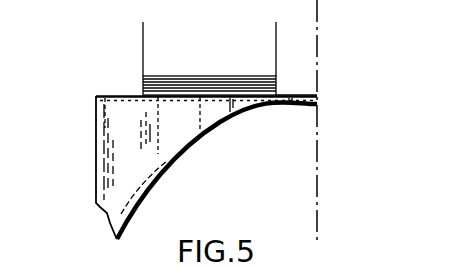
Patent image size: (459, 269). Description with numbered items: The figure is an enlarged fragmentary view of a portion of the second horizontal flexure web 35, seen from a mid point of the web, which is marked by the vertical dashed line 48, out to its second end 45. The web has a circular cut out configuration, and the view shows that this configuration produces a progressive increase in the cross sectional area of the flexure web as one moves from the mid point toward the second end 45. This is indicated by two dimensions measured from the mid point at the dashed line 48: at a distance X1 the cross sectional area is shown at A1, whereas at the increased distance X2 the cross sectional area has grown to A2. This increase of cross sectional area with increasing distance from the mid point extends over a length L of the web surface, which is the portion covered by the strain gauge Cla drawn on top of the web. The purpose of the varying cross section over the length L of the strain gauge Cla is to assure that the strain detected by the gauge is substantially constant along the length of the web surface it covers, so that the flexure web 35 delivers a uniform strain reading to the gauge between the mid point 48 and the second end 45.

The vertical dashed line 48 is at (321, 14).
The second end 45 is at (120, 158).
The second horizontal flexure web 35 is at (300, 95).
The strain gauge Cla is at (142, 86).
The length L is at (276, 37).
The cross sectional area A1 is at (198, 113).
The cross sectional area A2 is at (152, 114).
The distance X1 is at (317, 132).
The distance X2 is at (317, 160).